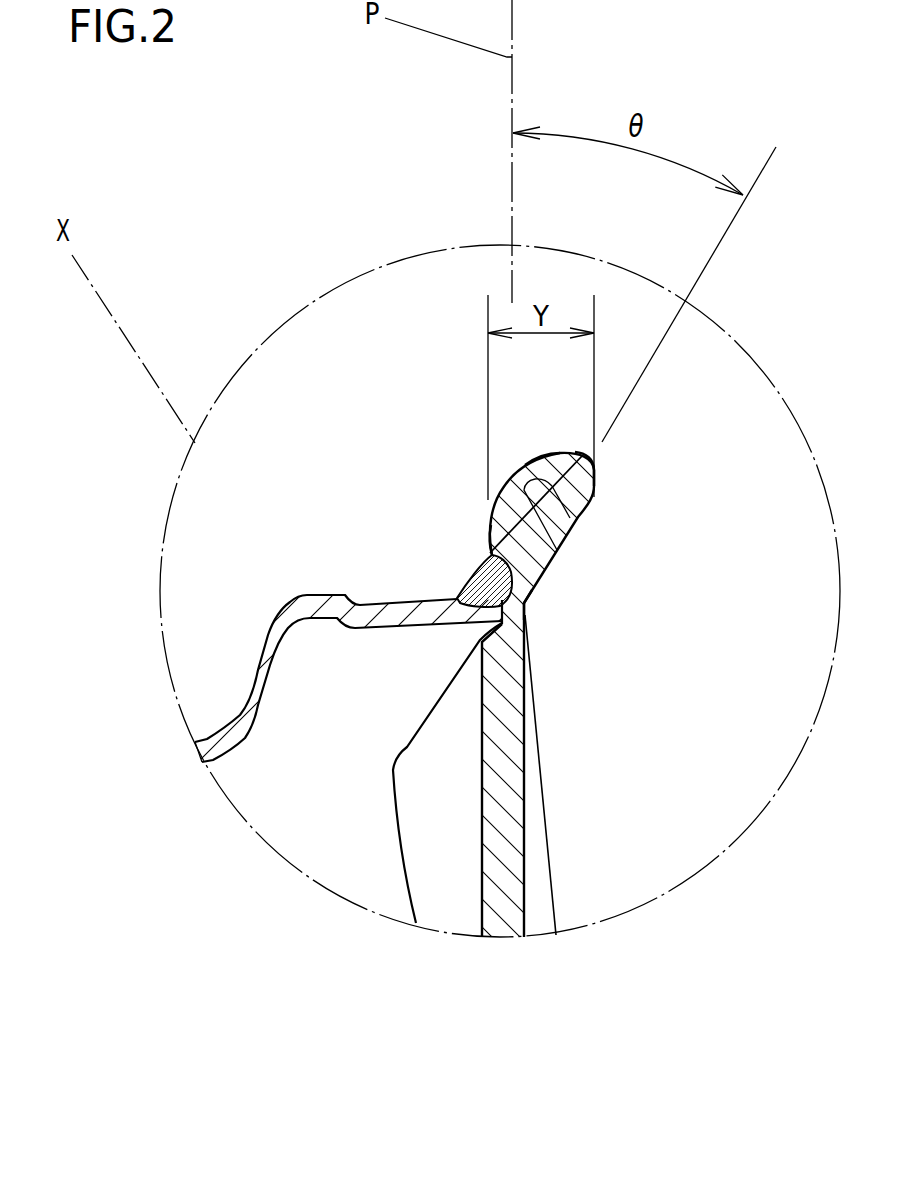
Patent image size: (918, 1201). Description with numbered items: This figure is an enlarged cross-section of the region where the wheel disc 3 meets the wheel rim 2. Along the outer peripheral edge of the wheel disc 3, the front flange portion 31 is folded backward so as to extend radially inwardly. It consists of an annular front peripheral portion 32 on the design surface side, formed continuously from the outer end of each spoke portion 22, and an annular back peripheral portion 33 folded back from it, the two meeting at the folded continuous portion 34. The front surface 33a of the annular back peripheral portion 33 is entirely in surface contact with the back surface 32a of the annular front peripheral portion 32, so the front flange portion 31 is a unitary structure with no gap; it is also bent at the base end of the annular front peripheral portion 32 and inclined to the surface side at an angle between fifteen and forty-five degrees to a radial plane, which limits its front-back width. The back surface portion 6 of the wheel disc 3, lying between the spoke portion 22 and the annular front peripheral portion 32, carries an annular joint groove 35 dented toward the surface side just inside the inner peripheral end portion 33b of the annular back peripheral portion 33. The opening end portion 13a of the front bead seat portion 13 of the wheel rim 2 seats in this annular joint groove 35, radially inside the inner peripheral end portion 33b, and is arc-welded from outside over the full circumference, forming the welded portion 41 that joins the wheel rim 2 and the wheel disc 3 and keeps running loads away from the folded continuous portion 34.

The wheel rim 2 is at (267, 661).
The wheel disc 3 is at (538, 892).
The back surface portion 6 is at (488, 630).
The front bead seat portion 13 is at (440, 602).
The opening end portion 13a is at (498, 617).
The spoke portion 22 is at (538, 812).
The front flange portion 31 is at (586, 480).
The annular front peripheral portion 32 is at (545, 548).
The back surface 32a is at (550, 484).
The annular back peripheral portion 33 is at (488, 553).
The front surface 33a is at (540, 518).
The inner peripheral end portion 33b is at (485, 552).
The folded continuous portion 34 is at (548, 458).
The annular joint groove 35 is at (527, 614).
The welded portion 41 is at (467, 585).